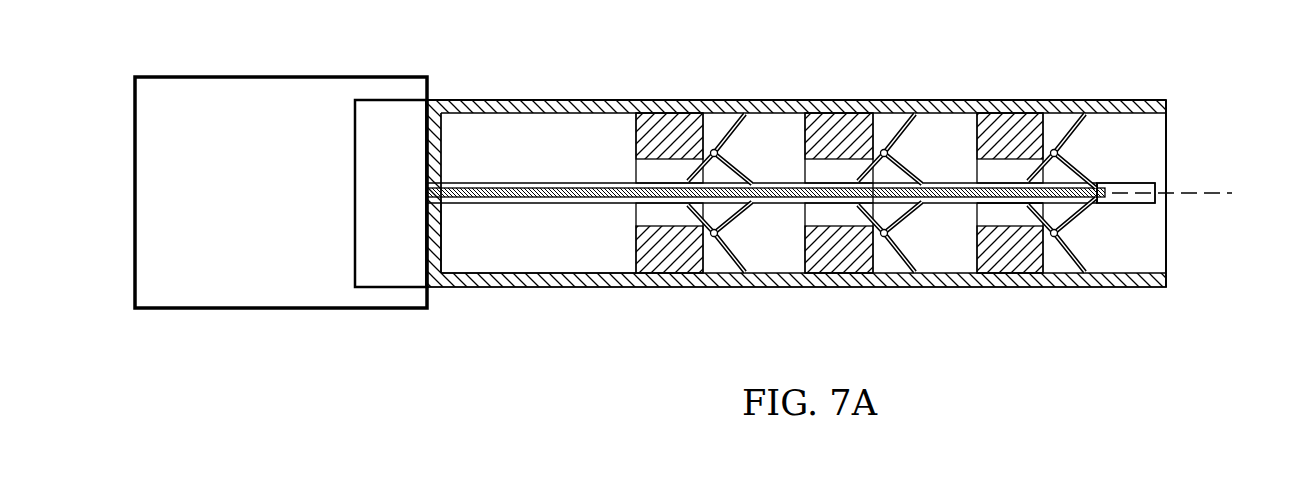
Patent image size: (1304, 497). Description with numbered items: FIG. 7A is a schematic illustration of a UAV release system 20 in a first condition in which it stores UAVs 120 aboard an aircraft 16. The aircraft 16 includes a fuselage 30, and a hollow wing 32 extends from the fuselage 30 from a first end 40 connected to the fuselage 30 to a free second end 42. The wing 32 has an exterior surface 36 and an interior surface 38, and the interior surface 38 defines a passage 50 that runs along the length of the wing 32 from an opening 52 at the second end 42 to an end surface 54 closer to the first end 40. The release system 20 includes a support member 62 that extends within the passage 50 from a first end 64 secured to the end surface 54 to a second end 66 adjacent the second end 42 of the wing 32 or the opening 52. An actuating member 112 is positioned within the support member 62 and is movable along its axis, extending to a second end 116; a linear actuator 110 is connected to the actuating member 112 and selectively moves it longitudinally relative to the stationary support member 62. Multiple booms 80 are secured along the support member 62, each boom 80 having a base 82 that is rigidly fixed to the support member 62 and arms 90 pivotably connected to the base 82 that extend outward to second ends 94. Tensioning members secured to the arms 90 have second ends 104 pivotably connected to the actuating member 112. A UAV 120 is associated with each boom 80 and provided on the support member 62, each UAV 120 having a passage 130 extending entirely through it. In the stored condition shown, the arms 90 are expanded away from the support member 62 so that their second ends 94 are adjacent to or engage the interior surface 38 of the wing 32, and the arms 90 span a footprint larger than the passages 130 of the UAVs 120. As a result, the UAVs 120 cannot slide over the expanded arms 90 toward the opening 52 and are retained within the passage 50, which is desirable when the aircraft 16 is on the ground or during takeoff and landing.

The aircraft 16 is at (284, 312).
The fuselage 30 is at (351, 325).
The linear actuator 110 is at (406, 203).
The first end 40 is at (439, 92).
The wing 32 is at (698, 98).
The second end 42 is at (1161, 98).
The first end 64 is at (451, 172).
The end surface 54 is at (442, 232).
The interior surface 38 is at (520, 272).
The passage 50 is at (582, 152).
The UAV release system 20 is at (615, 135).
The exterior surface 36 is at (915, 113).
The UAV 120 is at (798, 160).
The actuating member 112 is at (829, 194).
The support member 62 is at (558, 207).
The second end 116 is at (1104, 199).
The second end 66 is at (1143, 177).
The opening 52 is at (1177, 177).
The arms 90 is at (830, 227).
The booms 80 is at (768, 255).
The base 82 is at (864, 205).
The passage 130 is at (1008, 208).
The second end 94 is at (1066, 130).
The second ends 104 is at (1085, 160).